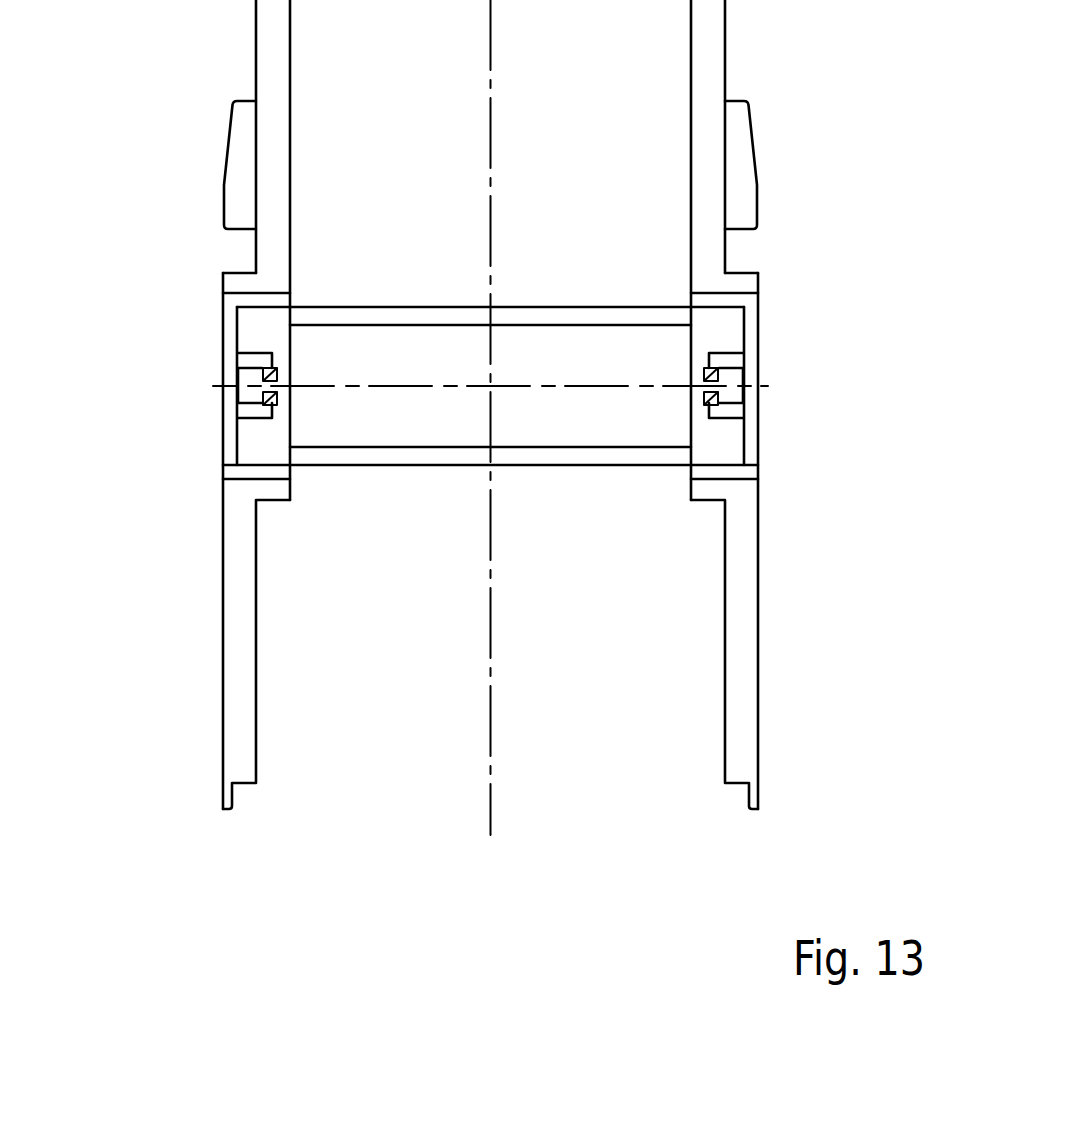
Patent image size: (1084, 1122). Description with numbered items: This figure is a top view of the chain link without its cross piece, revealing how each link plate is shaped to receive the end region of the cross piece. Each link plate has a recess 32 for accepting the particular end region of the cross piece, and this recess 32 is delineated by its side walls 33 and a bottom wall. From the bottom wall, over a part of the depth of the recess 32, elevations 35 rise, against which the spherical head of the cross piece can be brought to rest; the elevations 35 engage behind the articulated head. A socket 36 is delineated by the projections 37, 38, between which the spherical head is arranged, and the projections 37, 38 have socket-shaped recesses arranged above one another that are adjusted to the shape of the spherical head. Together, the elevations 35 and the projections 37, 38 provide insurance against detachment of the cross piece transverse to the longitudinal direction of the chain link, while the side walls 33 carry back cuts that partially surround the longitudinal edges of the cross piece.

The recess 32 is at (723, 322).
The side walls 33 is at (718, 440).
The elevations 35 is at (698, 400).
The socket 36 is at (725, 388).
The projection 37 is at (738, 360).
The projection 38 is at (727, 412).